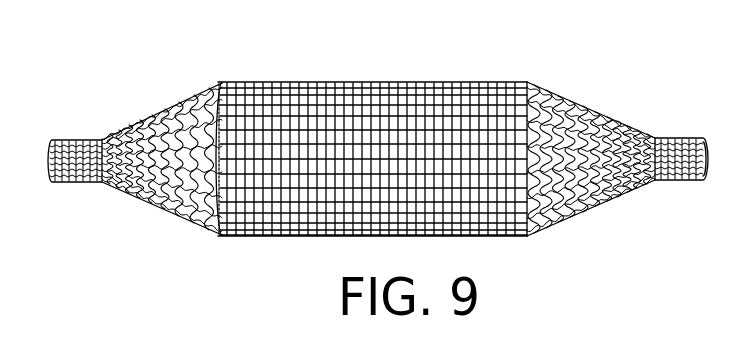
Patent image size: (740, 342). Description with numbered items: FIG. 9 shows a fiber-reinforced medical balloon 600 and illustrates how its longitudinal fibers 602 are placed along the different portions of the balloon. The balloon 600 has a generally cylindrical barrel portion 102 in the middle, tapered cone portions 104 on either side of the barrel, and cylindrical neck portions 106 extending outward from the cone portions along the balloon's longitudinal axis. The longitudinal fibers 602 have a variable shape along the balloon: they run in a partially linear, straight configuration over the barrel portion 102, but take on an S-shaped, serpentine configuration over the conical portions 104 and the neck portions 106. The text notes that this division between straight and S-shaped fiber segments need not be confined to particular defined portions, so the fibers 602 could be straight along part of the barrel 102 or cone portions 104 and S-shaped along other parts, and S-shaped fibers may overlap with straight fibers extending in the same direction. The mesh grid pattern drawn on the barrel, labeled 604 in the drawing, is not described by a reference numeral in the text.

The barrel portion 102 is at (375, 119).
The cone portion 104 is at (592, 127).
The neck portion 106 is at (685, 91).
The balloon 600 is at (381, 127).
The longitudinal fibers 602 is at (583, 213).
The mesh grid of body section 604 is at (228, 50).